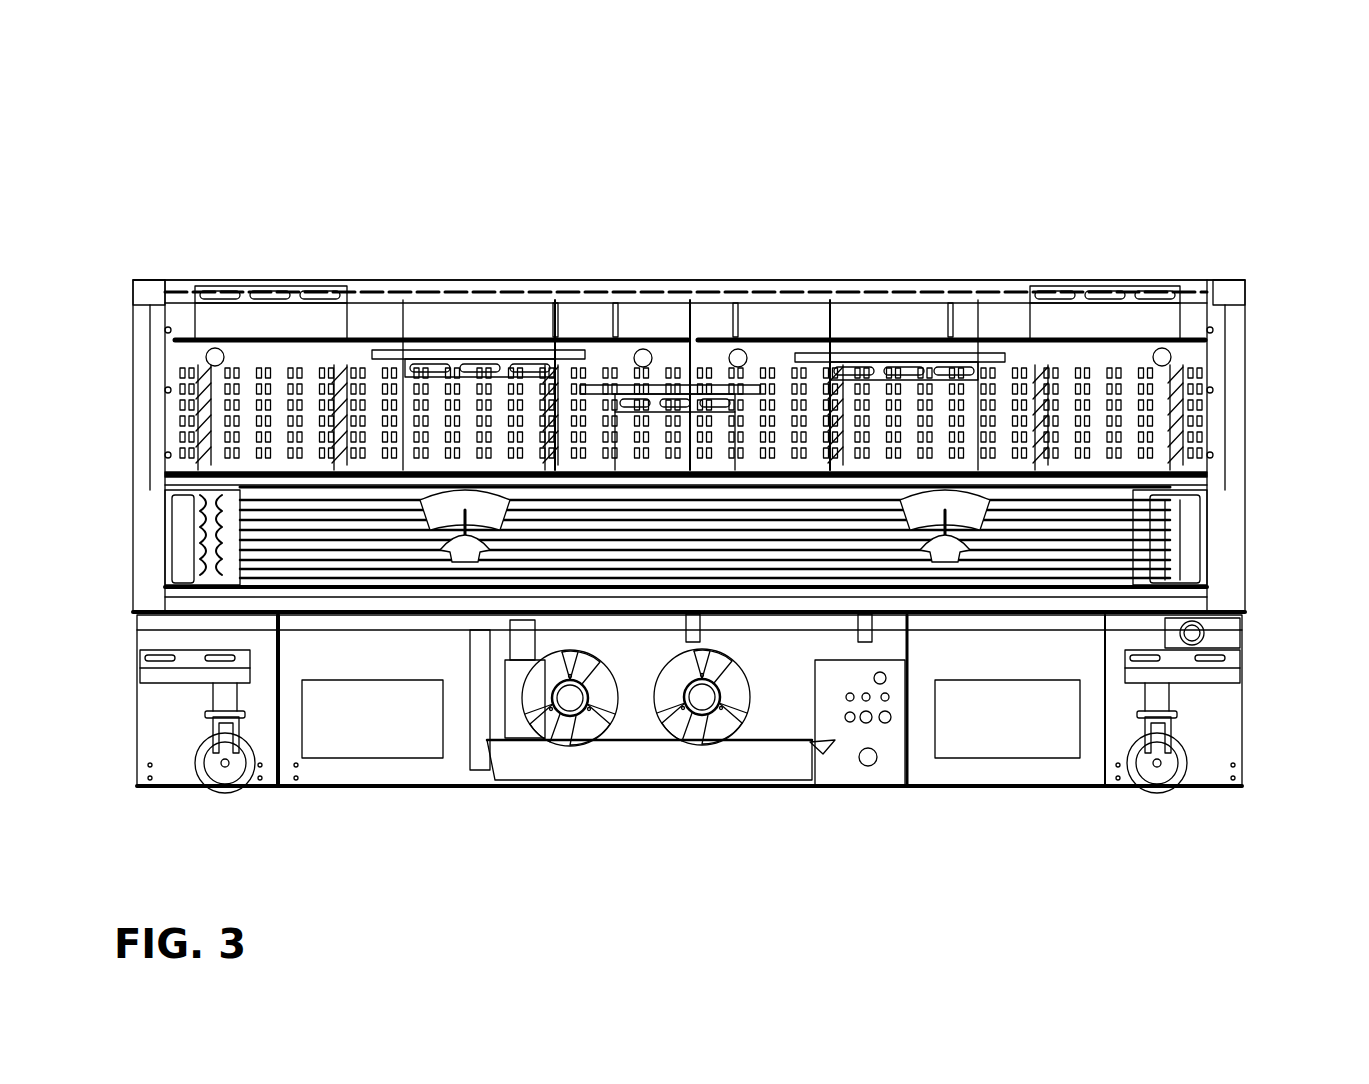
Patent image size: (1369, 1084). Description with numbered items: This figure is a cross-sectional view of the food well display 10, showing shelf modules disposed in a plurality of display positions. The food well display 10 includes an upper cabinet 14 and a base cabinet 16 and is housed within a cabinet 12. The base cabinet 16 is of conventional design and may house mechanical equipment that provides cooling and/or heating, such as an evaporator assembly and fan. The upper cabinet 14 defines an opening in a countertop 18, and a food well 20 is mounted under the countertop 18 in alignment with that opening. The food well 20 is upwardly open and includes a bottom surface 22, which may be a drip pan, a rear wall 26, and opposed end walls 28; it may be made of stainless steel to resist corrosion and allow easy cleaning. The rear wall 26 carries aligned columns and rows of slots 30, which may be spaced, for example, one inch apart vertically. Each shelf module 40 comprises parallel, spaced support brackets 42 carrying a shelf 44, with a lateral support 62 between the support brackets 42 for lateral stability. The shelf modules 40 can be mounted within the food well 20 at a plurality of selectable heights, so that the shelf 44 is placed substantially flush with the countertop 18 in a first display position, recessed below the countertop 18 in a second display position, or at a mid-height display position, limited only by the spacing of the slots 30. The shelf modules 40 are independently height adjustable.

The food well display 10 is at (707, 64).
The cabinet 12 is at (128, 600).
The upper cabinet 14 is at (1282, 276).
The base cabinet 16 is at (1282, 486).
The countertop 18 is at (1228, 288).
The food well 20 is at (700, 298).
The bottom surface 22 is at (640, 762).
The rear wall 26 is at (500, 318).
The end walls 28 is at (1225, 388).
The slots 30 is at (400, 470).
The shelf module 40 is at (200, 288).
The support brackets 42 is at (255, 295).
The shelf 44 is at (222, 300).
The lateral support 62 is at (555, 330).